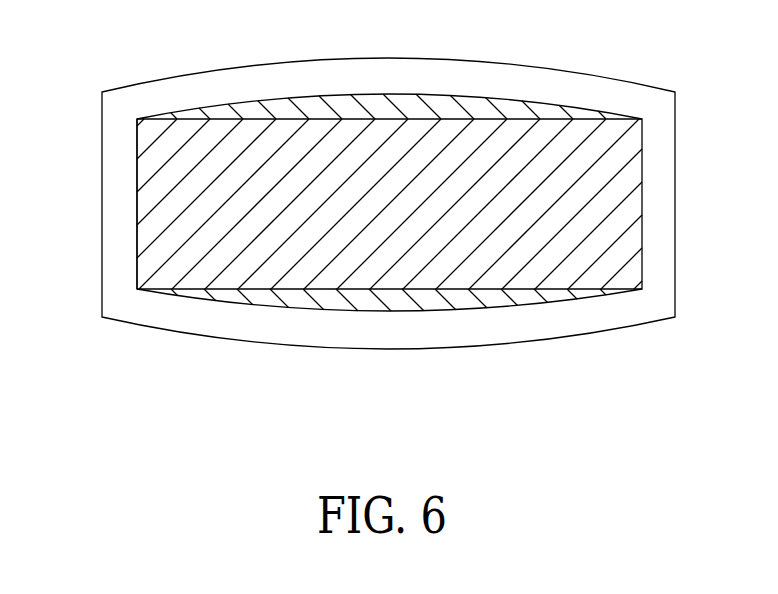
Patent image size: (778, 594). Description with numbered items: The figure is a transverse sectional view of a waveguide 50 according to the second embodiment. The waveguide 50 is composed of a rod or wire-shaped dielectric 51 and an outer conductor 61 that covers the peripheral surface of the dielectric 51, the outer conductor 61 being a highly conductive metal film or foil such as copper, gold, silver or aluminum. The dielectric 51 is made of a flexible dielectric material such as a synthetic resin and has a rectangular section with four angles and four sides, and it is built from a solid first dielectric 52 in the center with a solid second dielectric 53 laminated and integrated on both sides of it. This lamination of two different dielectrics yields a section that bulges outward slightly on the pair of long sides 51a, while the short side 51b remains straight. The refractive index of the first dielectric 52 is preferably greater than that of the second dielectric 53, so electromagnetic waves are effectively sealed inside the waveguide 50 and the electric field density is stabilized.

The waveguide 50 is at (647, 48).
The dielectric 51 is at (380, 206).
The long sides 51a is at (437, 93).
The side surface of seal body 51b is at (135, 168).
The first dielectric 52 is at (623, 152).
The second dielectric 53 is at (514, 108).
The outer conductor 61 is at (668, 220).